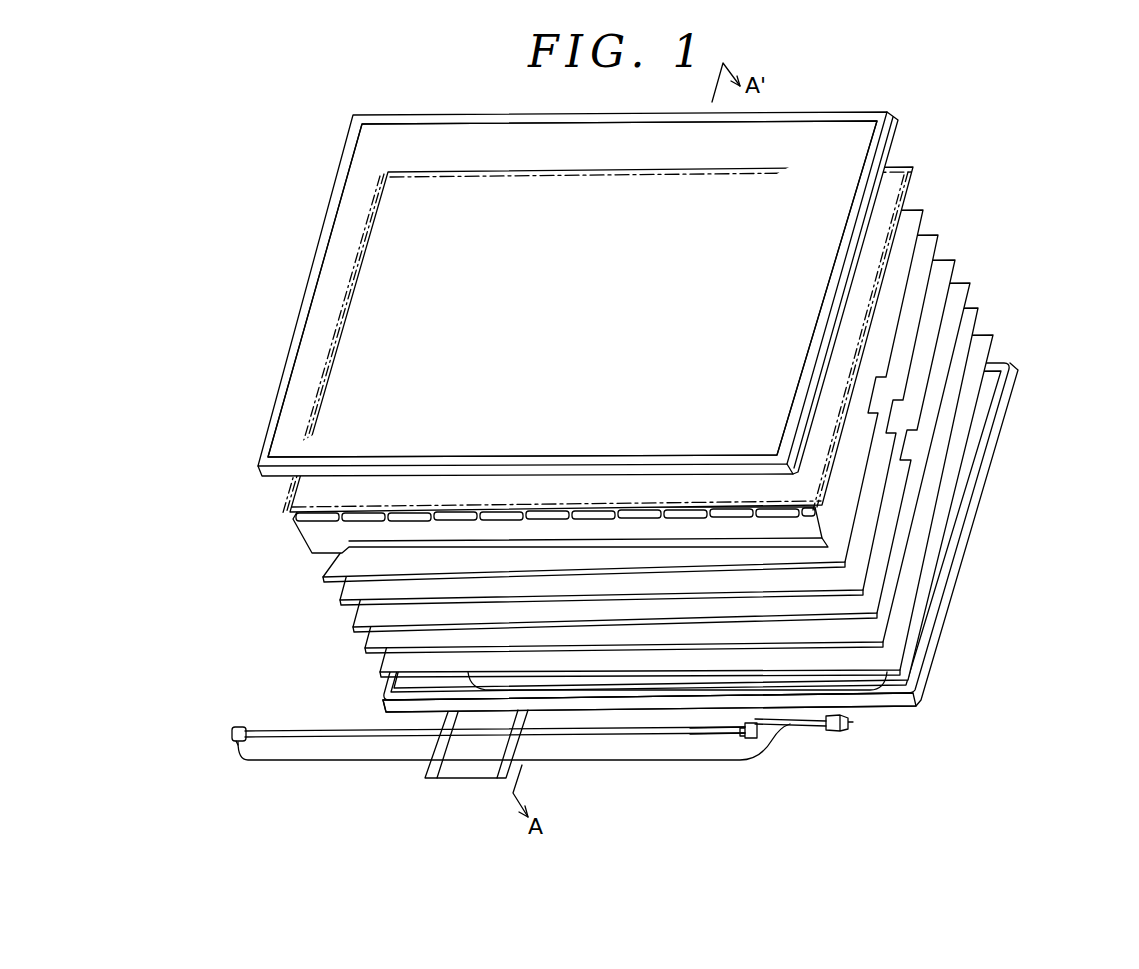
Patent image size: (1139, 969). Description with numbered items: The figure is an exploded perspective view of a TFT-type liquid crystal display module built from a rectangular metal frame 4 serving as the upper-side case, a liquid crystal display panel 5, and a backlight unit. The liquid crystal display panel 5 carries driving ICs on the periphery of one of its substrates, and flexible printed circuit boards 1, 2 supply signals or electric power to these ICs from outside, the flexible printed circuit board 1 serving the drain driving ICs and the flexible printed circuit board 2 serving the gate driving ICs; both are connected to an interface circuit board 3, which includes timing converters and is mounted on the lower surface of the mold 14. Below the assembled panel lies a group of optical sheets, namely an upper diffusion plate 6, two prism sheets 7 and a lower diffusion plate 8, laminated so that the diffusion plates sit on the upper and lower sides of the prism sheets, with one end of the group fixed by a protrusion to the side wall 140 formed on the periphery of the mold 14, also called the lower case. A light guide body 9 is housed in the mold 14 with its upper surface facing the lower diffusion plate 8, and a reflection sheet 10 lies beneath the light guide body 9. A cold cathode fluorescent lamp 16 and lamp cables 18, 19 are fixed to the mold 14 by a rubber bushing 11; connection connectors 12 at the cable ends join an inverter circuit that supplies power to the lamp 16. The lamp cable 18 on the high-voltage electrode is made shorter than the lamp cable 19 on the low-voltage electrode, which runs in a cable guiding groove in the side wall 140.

The flexible printed circuit board 1 is at (302, 540).
The flexible printed circuit board 2 is at (292, 500).
The interface circuit board 3 is at (440, 724).
The frame 4 is at (548, 294).
The liquid crystal display panel 5 is at (362, 404).
The upper diffusion plate 6 is at (925, 215).
The prism sheets 7 is at (955, 280).
The lower diffusion plate 8 is at (965, 292).
The light guide body 9 is at (982, 322).
The reflection sheet 10 is at (993, 348).
The rubber bushing 11 is at (760, 732).
The connection connectors 12 is at (853, 723).
The mold 14 is at (1005, 400).
The cold cathode fluorescent lamp 16 is at (690, 736).
The lamp cable 18 is at (787, 724).
The lamp cable 19 is at (630, 762).
The side wall 140 is at (873, 705).